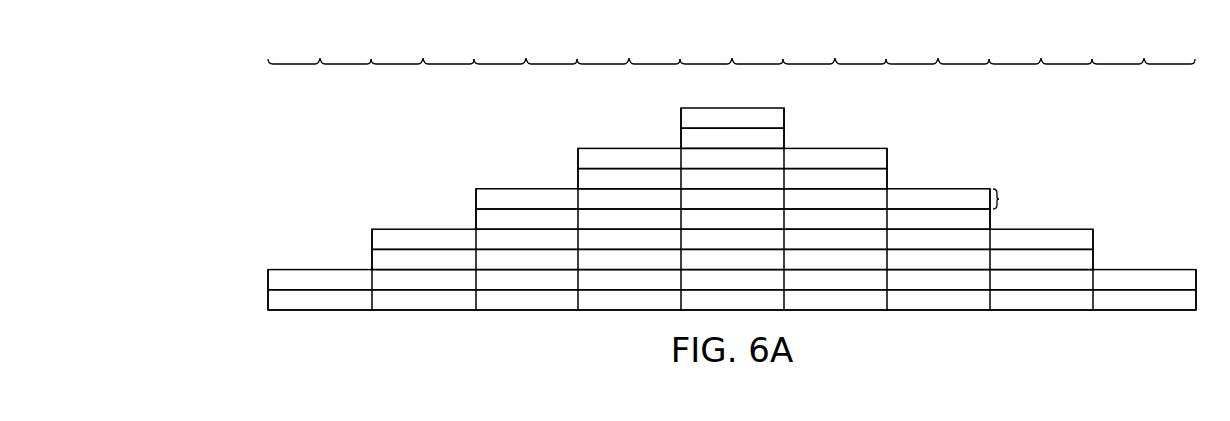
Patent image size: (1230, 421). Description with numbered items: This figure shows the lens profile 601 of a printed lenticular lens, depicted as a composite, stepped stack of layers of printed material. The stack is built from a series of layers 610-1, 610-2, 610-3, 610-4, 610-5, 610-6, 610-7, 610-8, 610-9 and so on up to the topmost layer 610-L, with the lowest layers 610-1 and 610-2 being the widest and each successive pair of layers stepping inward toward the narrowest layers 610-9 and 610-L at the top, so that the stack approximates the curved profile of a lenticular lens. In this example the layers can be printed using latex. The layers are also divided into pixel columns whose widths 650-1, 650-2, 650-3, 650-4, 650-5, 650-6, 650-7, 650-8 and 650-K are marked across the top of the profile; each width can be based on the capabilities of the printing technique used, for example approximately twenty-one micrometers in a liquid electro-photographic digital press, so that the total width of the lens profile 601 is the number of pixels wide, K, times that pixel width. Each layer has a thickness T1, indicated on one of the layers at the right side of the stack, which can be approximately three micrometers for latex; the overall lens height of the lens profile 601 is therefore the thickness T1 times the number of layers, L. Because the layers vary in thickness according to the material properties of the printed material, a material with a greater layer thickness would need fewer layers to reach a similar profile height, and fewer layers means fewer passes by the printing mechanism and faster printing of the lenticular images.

The lens profile 601 is at (243, 100).
The layer 610-1 is at (264, 293).
The layer 610-2 is at (264, 271).
The layer 610-3 is at (368, 255).
The layer 610-4 is at (368, 232).
The layer 610-5 is at (472, 215).
The layer 610-6 is at (472, 193).
The layer 610-7 is at (574, 173).
The layer 610-8 is at (574, 152).
The layer 610-9 is at (677, 133).
The layer 610-L is at (677, 112).
The width 650-1 is at (319, 49).
The width 650-2 is at (422, 49).
The width 650-3 is at (525, 49).
The width 650-4 is at (628, 49).
The width 650-5 is at (731, 49).
The width 650-6 is at (834, 49).
The width 650-7 is at (937, 49).
The width 650-8 is at (1040, 49).
The width 650-K is at (1143, 49).
The thickness T1 is at (1005, 199).